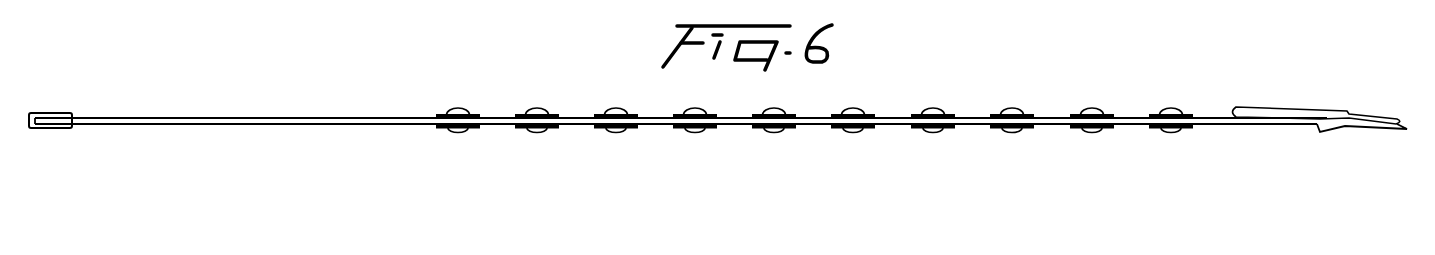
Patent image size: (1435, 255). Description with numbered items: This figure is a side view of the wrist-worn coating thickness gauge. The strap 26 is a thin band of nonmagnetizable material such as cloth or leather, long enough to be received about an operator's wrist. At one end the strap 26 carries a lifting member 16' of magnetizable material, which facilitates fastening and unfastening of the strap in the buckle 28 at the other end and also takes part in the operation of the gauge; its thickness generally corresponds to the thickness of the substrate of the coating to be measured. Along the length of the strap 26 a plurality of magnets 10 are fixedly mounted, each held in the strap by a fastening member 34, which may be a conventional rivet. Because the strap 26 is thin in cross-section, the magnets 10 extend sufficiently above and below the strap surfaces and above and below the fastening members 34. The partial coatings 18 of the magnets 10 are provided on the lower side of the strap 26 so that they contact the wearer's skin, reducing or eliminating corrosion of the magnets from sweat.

The magnet 10 is at (863, 108).
The lifting member 16' is at (67, 91).
The partial coating 18 is at (775, 133).
The strap 26 is at (975, 122).
The buckle 28 is at (1268, 108).
The fastening member 34 is at (953, 115).